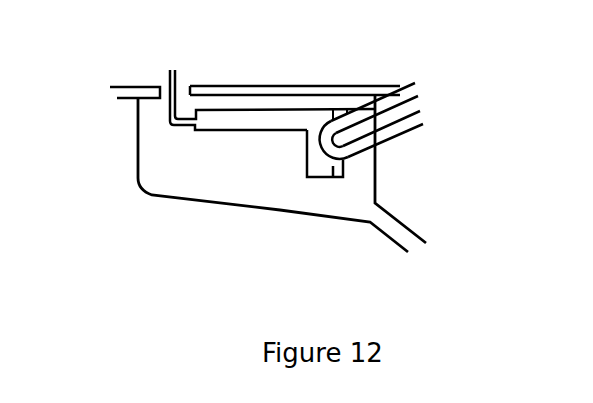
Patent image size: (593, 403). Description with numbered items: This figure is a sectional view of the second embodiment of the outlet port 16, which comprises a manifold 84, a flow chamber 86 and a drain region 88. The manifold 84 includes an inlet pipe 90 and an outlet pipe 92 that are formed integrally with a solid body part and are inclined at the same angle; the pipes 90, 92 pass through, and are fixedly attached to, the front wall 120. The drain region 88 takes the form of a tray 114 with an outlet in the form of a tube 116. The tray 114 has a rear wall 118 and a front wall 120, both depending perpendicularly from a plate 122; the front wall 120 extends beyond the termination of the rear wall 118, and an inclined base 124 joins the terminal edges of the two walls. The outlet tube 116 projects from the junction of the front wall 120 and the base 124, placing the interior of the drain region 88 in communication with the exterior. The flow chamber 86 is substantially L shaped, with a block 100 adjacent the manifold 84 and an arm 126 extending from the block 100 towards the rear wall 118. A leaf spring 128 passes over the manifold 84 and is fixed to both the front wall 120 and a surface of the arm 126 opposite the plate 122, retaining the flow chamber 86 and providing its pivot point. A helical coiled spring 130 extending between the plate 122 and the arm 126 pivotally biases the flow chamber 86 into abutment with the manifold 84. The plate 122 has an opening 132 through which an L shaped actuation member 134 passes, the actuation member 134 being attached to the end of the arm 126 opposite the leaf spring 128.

The outlet port 16 is at (403, 172).
The manifold 84 is at (351, 108).
The flow chamber 86 is at (278, 120).
The drain region 88 is at (170, 174).
The inlet pipe 90 is at (408, 112).
The outlet pipe 92 is at (405, 129).
The block 100 is at (320, 170).
The tray 114 is at (212, 204).
The outlet tube 116 is at (413, 243).
The rear wall 118 is at (138, 137).
The front wall 120 is at (377, 195).
The plate 122 is at (248, 84).
The base 124 is at (250, 212).
The arm 126 is at (208, 117).
The leaf spring 128 is at (365, 107).
The helical coiled spring 130 is at (227, 103).
The opening 132 is at (161, 84).
The actuation member 134 is at (168, 112).